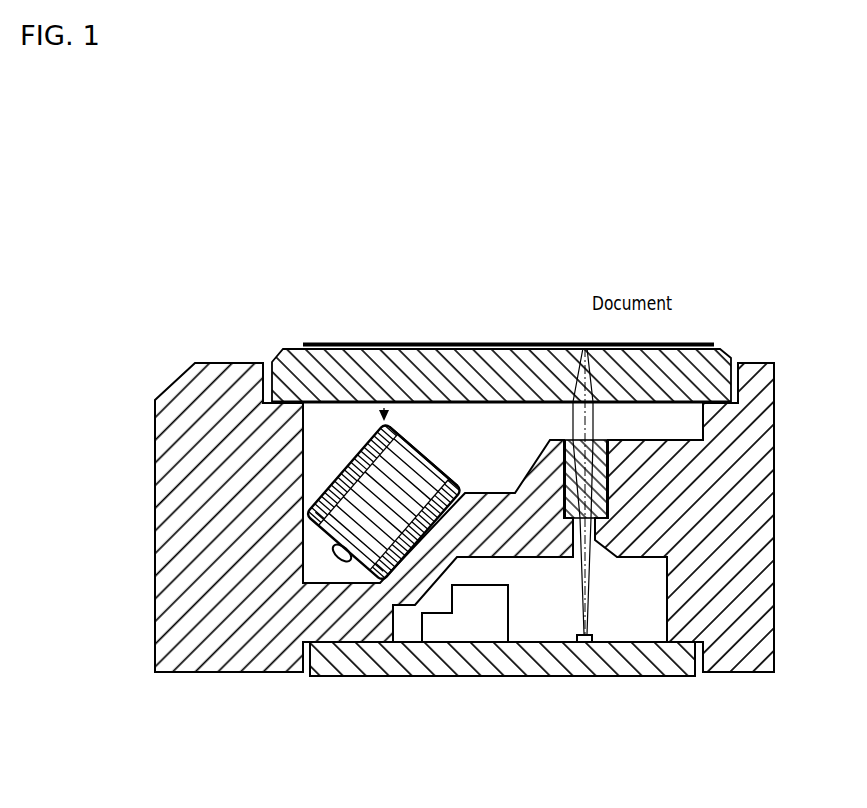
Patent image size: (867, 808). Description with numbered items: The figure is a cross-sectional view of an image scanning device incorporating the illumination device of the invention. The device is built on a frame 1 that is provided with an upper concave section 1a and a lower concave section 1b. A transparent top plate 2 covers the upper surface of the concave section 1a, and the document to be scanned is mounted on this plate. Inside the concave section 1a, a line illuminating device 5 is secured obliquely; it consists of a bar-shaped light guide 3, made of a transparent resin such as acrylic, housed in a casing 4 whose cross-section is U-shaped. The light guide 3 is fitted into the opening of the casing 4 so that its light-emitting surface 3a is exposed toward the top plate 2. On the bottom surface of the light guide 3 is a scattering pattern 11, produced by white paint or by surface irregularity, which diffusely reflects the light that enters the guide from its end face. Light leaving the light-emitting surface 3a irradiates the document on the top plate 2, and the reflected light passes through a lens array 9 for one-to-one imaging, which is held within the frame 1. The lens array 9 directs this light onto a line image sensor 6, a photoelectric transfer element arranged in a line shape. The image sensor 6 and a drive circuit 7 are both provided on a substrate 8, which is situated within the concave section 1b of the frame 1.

The frame 1 is at (172, 512).
The concave section 1a is at (306, 416).
The concave section 1b is at (667, 572).
The transparent top plate 2 is at (518, 343).
The bar-shaped light guide 3 is at (335, 481).
The light-emitting surface 3a is at (422, 450).
The casing 4 is at (353, 452).
The line illuminating device 5 is at (384, 410).
The line image sensor 6 is at (582, 633).
The drive circuit 7 is at (447, 630).
The substrate 8 is at (477, 668).
The lens array 9 is at (598, 438).
The scattering pattern 11 is at (352, 548).